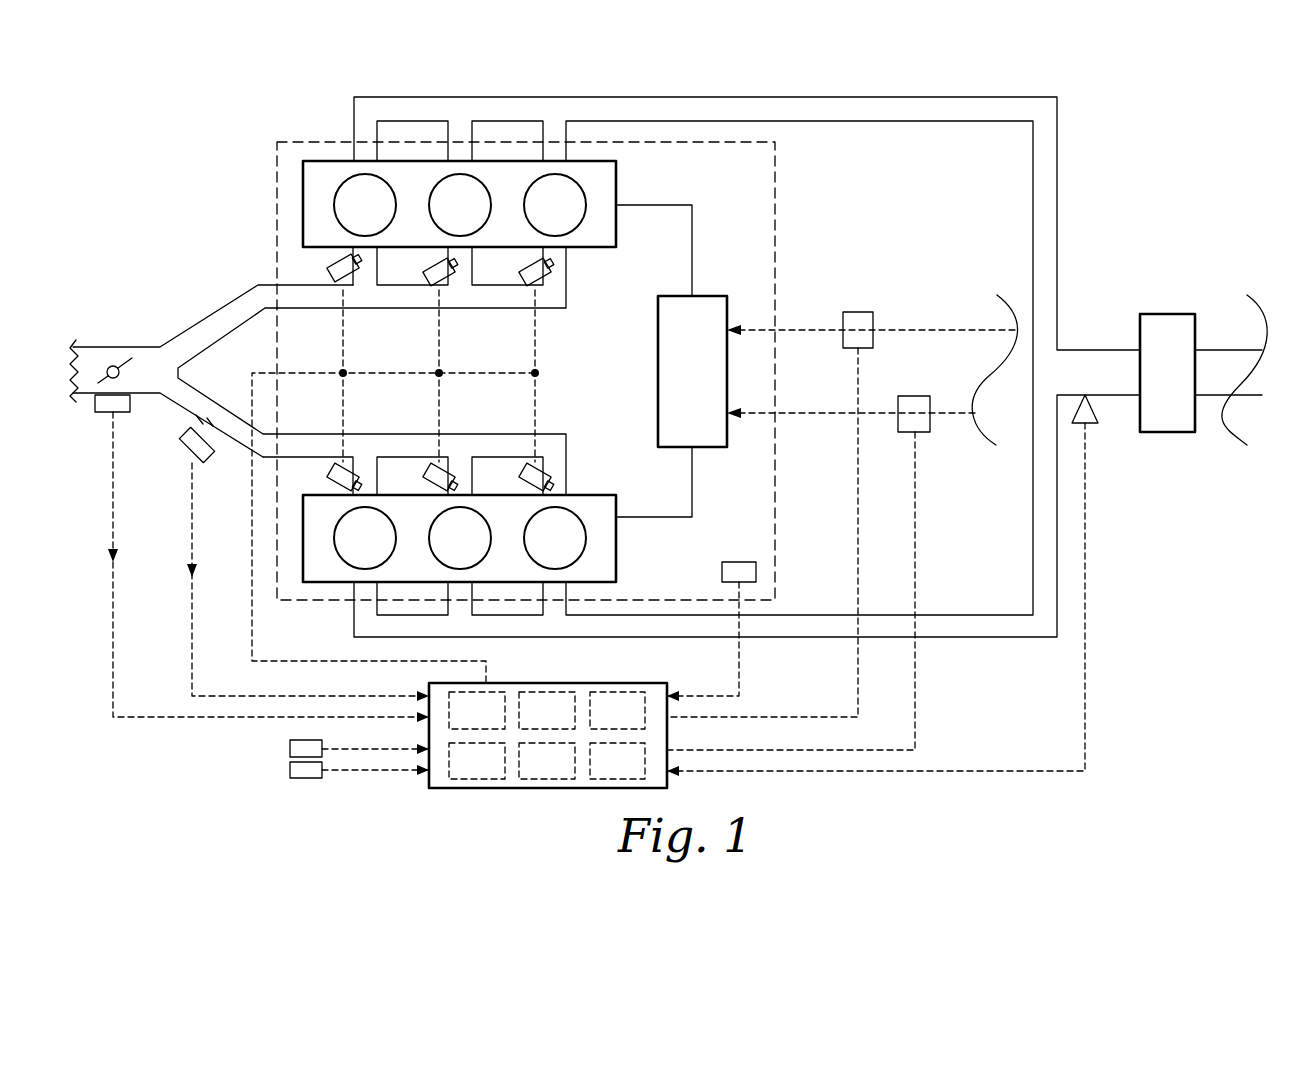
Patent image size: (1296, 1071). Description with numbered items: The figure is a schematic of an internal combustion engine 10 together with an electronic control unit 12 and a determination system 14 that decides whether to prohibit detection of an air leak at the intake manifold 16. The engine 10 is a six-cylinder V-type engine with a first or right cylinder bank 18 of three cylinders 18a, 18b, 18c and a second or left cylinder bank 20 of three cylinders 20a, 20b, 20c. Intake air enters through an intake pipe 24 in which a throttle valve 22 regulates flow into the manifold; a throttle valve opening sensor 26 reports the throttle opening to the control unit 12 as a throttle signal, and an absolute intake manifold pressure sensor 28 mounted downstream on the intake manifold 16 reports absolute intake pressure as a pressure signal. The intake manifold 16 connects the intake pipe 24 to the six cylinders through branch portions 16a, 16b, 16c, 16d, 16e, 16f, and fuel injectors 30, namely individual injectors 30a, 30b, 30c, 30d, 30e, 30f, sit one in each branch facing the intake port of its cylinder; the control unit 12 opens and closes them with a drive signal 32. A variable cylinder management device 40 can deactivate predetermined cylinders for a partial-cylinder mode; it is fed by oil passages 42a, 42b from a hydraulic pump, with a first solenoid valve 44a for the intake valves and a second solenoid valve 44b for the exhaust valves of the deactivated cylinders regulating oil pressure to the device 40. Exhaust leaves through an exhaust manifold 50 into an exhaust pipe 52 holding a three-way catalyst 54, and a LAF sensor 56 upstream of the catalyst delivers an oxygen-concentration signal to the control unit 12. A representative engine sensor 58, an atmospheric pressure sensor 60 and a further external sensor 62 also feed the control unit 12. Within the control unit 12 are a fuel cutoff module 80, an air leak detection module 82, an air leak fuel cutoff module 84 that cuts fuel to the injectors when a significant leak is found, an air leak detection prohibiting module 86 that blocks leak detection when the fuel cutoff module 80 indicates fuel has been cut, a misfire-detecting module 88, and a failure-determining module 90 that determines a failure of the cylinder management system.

The internal combustion engine 10 is at (275, 222).
The electronic control unit (ECU) 12 is at (522, 790).
The determination system 14 is at (180, 772).
The intake manifold 16 is at (232, 443).
The branch portion 16a is at (367, 465).
The branch portion 16b is at (467, 475).
The branch portion 16c is at (567, 482).
The branch portion 16d is at (366, 283).
The branch portion 16e is at (468, 270).
The branch portion 16f is at (562, 272).
The first or right cylinder bank 18 is at (617, 545).
The cylinder 18a is at (382, 549).
The cylinder 18b is at (477, 549).
The cylinder 18c is at (572, 549).
The second or left cylinder bank 20 is at (303, 203).
The cylinder 20a is at (382, 216).
The cylinder 20b is at (477, 216).
The cylinder 20c is at (572, 216).
The throttle valve 22 is at (132, 358).
The intake pipe 24 is at (147, 347).
The throttle valve opening sensor 26 is at (130, 413).
The absolute intake manifold pressure sensor 28 is at (186, 448).
The fuel injectors 30 is at (585, 294).
The fuel injector 30a is at (333, 470).
The fuel injector 30b is at (430, 468).
The fuel injector 30c is at (547, 470).
The fuel injector 30d is at (333, 262).
The fuel injector 30e is at (428, 281).
The fuel injector 30f is at (525, 273).
The signal 32 is at (440, 345).
The VCM device 40 is at (658, 372).
The oil passage 42a is at (805, 331).
The oil passage 42b is at (808, 414).
The first electromagnetic or solenoid valve 44a is at (857, 312).
The second electromagnetic or solenoid valve 44b is at (930, 433).
The exhaust manifold 50 is at (940, 122).
The exhaust pipe 52 is at (1105, 350).
The three-way catalyst 54 is at (1170, 313).
The LAF sensor 56 is at (1090, 410).
The engine sensor 58 is at (738, 562).
The atmospheric pressure sensor 60 is at (290, 750).
The sensor 62 is at (290, 770).
The fuel cutoff module 80 is at (490, 721).
The air leak detection module 82 is at (490, 771).
The air leak fuel cutoff module 84 is at (560, 721).
The air leak detection prohibiting module 86 is at (560, 771).
The misfire-detecting module 88 is at (630, 721).
The failure-determining module 90 is at (630, 771).